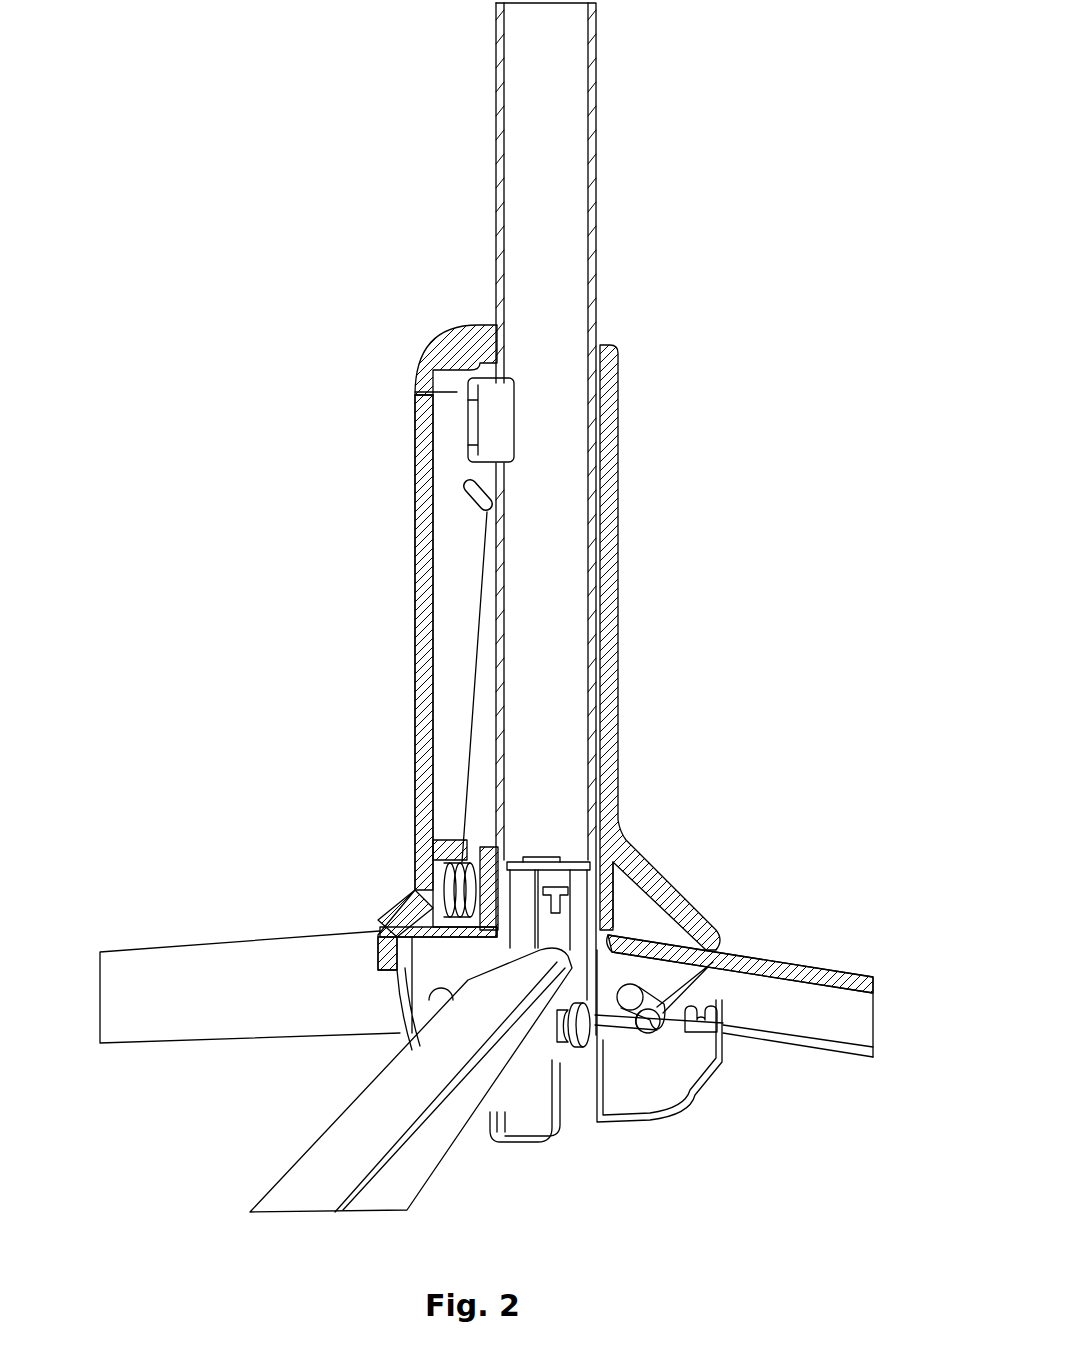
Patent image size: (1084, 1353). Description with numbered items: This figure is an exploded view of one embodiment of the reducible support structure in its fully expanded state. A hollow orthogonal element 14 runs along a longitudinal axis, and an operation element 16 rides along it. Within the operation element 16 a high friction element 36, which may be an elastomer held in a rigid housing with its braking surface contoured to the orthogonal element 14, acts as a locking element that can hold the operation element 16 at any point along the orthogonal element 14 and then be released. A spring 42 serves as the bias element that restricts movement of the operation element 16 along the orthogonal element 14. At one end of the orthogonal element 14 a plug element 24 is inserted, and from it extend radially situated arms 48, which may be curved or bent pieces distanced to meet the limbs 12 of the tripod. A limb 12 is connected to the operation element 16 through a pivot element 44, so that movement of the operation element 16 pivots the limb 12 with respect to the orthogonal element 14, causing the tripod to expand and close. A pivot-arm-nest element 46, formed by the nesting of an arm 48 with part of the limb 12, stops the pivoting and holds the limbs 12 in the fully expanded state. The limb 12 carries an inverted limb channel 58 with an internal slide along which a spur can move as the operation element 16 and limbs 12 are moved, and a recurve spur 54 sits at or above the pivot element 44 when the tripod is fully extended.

The limb 12 is at (340, 1165).
The orthogonal element 14 is at (590, 65).
The operation element 16 is at (425, 622).
The plug element 24 is at (560, 1105).
The high friction element 36 is at (498, 435).
The spring 42 is at (448, 905).
The pivot element 44 is at (625, 1000).
The pivot-arm-nest element 46 is at (655, 1015).
The arm 48 is at (665, 1075).
The recurve spur 54 is at (712, 992).
The inverted limb channel 58 is at (810, 948).